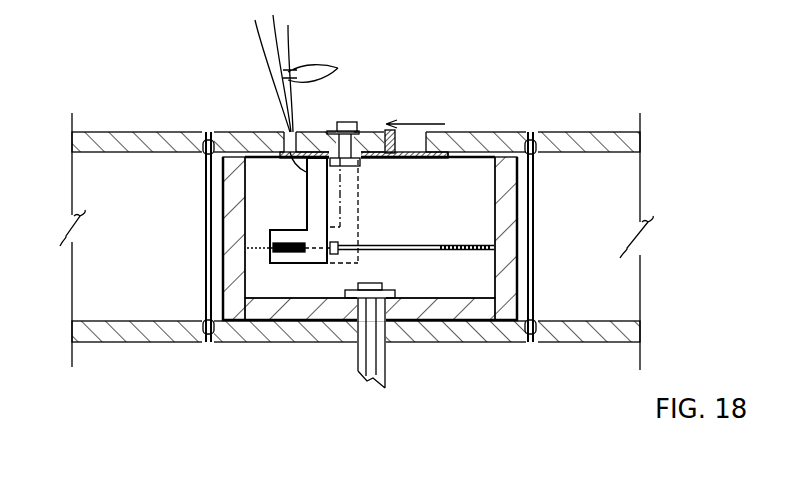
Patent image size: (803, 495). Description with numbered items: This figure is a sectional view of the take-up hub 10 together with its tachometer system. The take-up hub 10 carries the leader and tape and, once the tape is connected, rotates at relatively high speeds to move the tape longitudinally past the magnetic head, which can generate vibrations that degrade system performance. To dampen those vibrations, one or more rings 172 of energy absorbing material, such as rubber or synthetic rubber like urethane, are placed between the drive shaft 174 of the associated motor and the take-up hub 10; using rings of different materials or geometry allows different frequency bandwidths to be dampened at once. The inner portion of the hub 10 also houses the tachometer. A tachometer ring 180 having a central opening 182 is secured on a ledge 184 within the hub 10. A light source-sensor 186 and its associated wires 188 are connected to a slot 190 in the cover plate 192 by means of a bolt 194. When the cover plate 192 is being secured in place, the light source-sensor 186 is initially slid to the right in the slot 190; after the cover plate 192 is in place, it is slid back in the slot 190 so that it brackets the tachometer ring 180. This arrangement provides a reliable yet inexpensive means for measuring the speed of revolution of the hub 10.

The take-up hub 10 is at (510, 191).
The ring of energy absorbing material 172 is at (388, 290).
The drive shaft 174 is at (385, 372).
The tachometer ring 180 is at (463, 243).
The central opening 182 is at (422, 243).
The ledge 184 is at (248, 252).
The light source-sensor 186 is at (287, 236).
The wires 188 is at (317, 93).
The slot 190 is at (424, 141).
The cover plate 192 is at (186, 137).
The bolt 194 is at (350, 122).